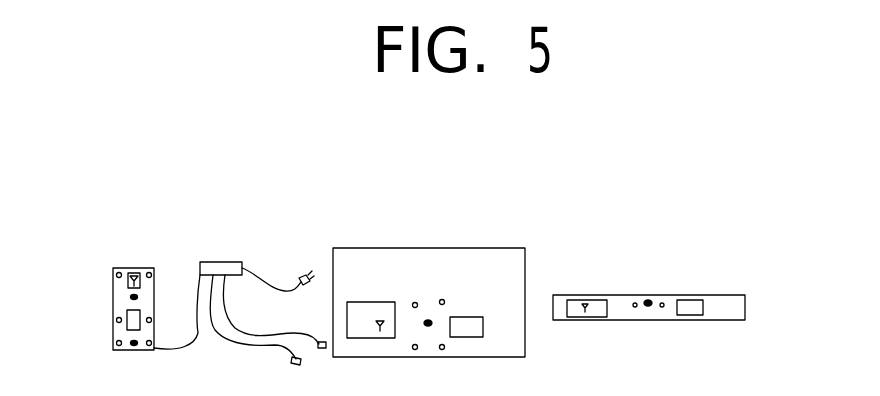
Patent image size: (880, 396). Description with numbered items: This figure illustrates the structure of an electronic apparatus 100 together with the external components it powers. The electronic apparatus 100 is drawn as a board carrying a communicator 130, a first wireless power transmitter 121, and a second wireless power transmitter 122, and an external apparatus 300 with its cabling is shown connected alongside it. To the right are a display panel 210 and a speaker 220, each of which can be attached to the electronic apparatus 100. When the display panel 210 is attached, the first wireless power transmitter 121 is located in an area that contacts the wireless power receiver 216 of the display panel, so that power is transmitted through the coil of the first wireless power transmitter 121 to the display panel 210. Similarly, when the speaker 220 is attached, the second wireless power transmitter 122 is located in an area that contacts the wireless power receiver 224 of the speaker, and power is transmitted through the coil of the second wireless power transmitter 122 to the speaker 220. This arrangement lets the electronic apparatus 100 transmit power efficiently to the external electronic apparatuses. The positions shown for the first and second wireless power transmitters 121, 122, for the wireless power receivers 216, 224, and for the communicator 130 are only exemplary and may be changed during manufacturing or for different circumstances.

The electronic apparatus 100 is at (131, 268).
The communicator 130 is at (126, 280).
The first wireless power transmitter 121 is at (129, 300).
The second wireless power transmitter 122 is at (129, 346).
The external apparatus 300 is at (218, 262).
The display panel 210 is at (358, 248).
The wireless power receiver of the display panel 216 is at (428, 319).
The speaker 220 is at (722, 295).
The wireless power receiver of the speaker 224 is at (648, 300).